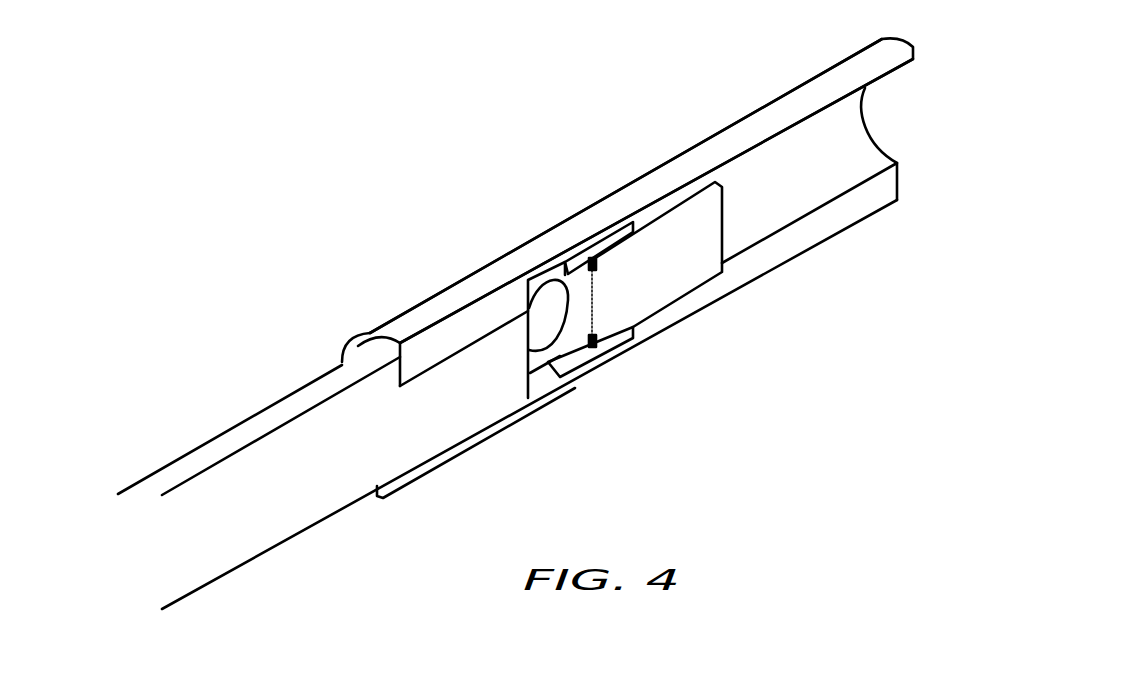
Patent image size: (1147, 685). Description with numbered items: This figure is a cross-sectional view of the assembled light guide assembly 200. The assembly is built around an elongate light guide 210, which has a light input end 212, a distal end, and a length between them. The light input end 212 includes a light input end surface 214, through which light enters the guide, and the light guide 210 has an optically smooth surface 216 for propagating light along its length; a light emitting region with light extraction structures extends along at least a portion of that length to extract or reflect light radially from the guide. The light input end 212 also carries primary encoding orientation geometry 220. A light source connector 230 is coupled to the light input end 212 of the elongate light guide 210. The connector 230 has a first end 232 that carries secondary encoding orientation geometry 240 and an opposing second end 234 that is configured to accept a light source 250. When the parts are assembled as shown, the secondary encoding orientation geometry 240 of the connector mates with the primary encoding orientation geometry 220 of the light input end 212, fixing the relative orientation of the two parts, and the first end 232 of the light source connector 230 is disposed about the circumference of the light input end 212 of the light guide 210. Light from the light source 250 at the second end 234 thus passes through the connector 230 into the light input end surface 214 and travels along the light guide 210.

The light guide assembly 200 is at (278, 248).
The elongate light guide 210 is at (229, 437).
The light input end 212 is at (450, 417).
The light input end surface 214 is at (533, 383).
The optically smooth surface 216 is at (287, 542).
The primary encoding orientation geometry 220 is at (385, 362).
The light source connector 230 is at (780, 108).
The first end 232 is at (402, 320).
The second end 234 is at (878, 136).
The secondary encoding orientation geometry 240 is at (482, 313).
The light source 250 is at (676, 268).